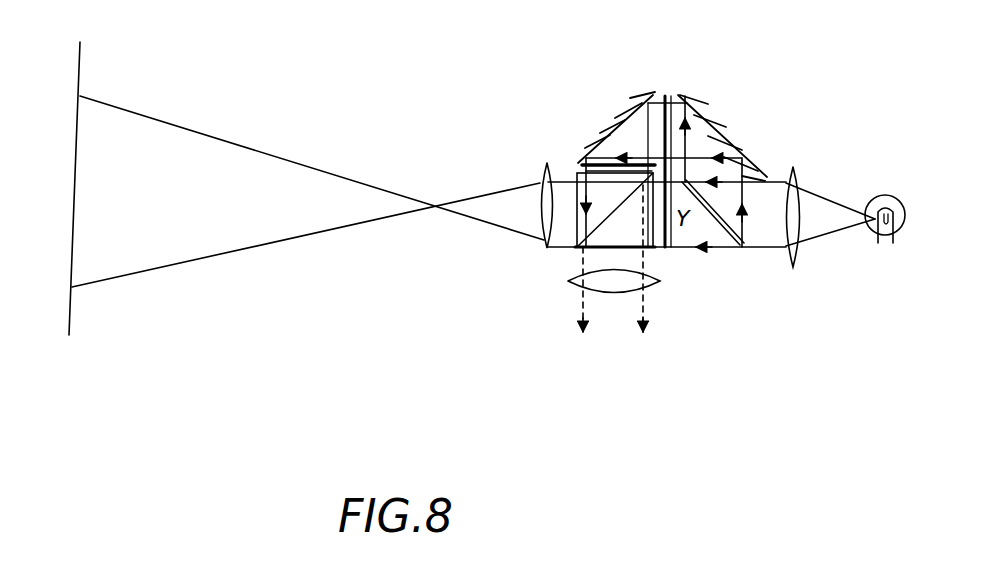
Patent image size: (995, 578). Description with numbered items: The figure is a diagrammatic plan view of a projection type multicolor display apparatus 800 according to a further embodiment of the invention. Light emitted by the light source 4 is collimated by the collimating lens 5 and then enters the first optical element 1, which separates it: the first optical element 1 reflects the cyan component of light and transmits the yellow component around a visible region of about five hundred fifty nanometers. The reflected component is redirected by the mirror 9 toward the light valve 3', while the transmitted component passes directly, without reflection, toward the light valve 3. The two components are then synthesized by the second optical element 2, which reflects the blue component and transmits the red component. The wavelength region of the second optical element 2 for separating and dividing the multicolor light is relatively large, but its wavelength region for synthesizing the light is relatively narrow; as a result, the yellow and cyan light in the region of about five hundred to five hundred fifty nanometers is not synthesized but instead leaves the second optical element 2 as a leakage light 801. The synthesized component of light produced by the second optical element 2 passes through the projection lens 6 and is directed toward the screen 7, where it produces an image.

The first optical element 1 is at (735, 250).
The second optical element 2 is at (567, 241).
The light valve 3 is at (666, 138).
The light valve 3' is at (586, 145).
The light source 4 is at (884, 195).
The collimating lens 5 is at (800, 172).
The projection lens 6 is at (535, 212).
The screen 7 is at (74, 318).
The mirror 9 is at (612, 142).
The projection type multicolor display apparatus 800 is at (543, 95).
The leakage light 801 is at (656, 288).